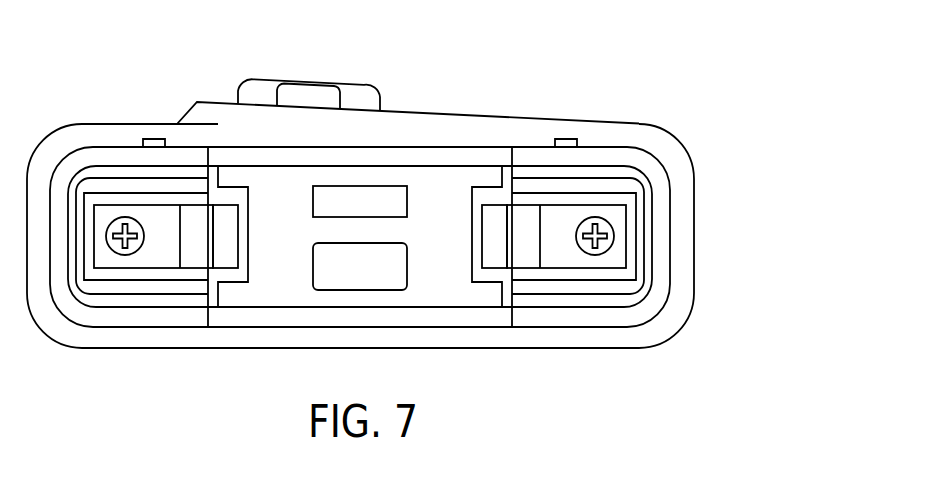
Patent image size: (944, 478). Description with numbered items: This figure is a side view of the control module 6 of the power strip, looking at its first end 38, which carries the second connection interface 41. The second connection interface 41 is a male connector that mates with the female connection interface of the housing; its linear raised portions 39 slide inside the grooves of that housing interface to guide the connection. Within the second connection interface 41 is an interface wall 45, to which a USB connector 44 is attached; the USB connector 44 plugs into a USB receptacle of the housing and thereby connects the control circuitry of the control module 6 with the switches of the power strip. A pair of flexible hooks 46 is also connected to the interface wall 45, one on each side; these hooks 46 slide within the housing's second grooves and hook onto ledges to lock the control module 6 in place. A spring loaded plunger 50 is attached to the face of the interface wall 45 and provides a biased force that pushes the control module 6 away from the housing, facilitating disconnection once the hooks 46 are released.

The control module 6 is at (467, 82).
The first end 38 is at (692, 234).
The linear raised portions 39 is at (154, 139).
The second connection interface 41 is at (456, 287).
The USB connector 44 is at (390, 203).
The interface wall 45 is at (258, 210).
The flexible hooks 46 is at (223, 243).
The spring loaded plunger 50 is at (338, 272).